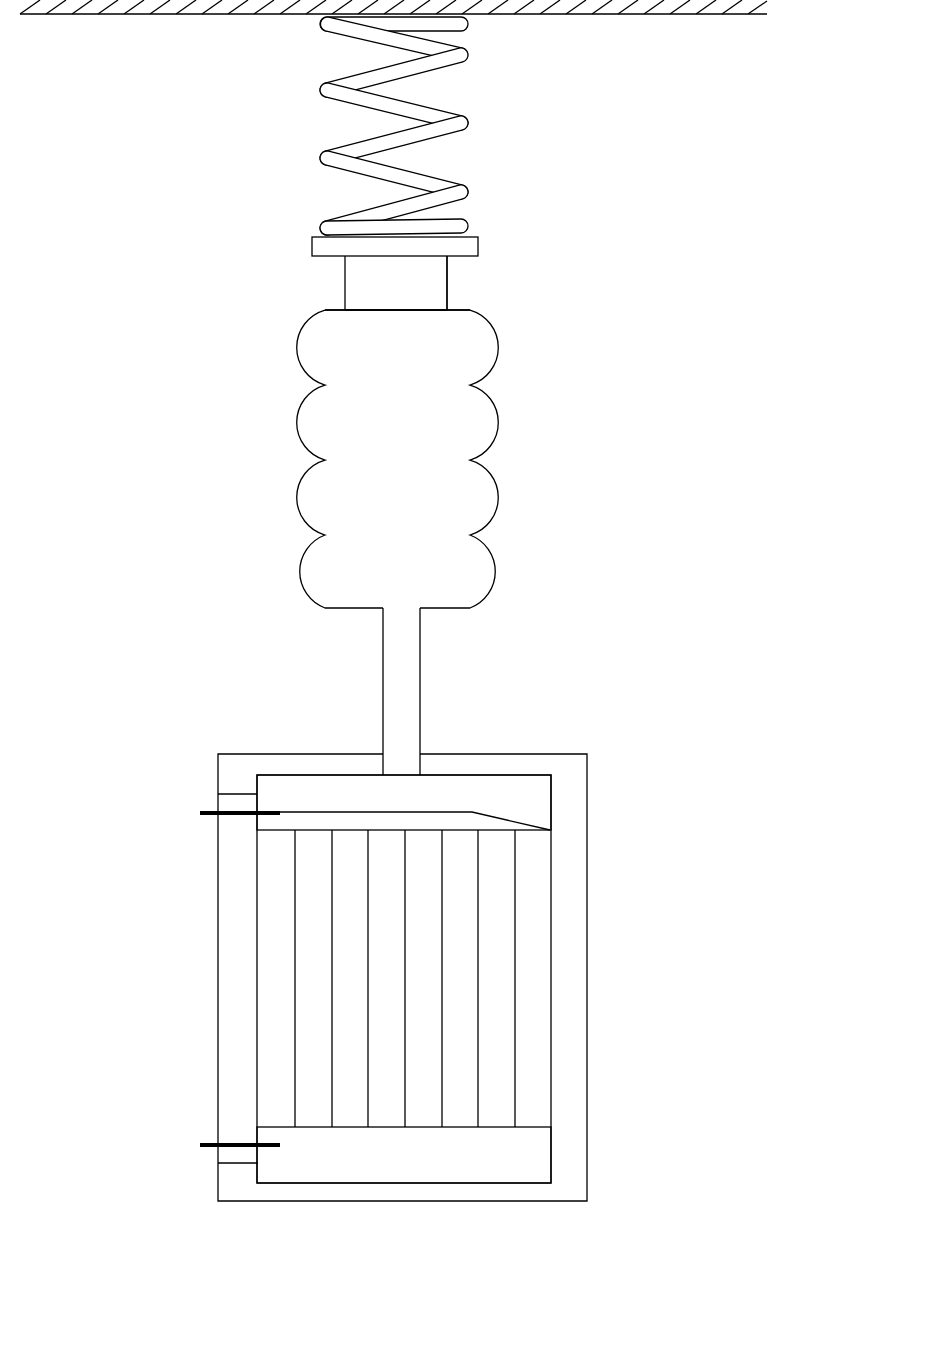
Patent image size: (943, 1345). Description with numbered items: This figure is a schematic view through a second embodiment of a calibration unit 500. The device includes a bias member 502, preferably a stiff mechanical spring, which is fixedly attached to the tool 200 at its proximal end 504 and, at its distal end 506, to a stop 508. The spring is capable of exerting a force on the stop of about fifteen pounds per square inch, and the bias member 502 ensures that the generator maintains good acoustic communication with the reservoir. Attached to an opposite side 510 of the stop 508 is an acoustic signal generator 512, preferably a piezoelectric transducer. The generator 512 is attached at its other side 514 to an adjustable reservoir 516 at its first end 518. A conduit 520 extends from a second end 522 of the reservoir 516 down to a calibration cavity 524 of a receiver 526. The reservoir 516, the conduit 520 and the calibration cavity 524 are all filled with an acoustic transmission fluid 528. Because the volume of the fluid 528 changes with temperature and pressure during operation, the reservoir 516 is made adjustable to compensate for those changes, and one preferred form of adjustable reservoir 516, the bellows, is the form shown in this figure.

The tool 200 is at (393, 31).
The calibration unit 500 is at (662, 482).
The bias member 502 is at (242, 83).
The proximal end 504 is at (444, 44).
The distal end 506 is at (432, 209).
The stop 508 is at (361, 227).
The opposite side 510 is at (494, 283).
The acoustic signal generator 512 is at (418, 293).
The other side 514 is at (355, 286).
The reservoir 516 is at (458, 459).
The first end 518 is at (397, 336).
The conduit 520 is at (332, 691).
The second end 522 is at (467, 691).
The calibration cavity 524 is at (470, 959).
The receiver 526 is at (190, 959).
The acoustic transmission fluid 528 is at (423, 473).